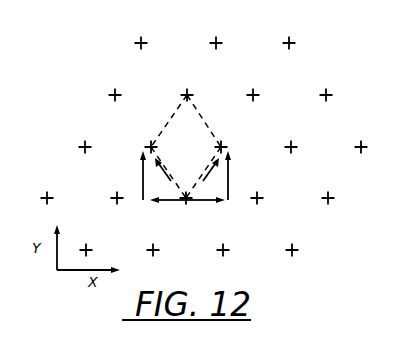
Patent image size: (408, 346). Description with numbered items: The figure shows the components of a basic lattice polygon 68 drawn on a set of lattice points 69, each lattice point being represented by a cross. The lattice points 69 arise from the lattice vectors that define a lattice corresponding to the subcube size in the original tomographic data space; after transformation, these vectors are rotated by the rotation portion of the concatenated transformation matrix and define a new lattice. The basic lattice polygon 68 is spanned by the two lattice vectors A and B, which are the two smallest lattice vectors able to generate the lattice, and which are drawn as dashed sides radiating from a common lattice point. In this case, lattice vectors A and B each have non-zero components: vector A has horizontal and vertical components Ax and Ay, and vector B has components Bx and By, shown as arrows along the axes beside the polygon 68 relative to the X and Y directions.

The basic lattice polygon 68 is at (181, 156).
The set of lattice points 69 is at (214, 19).
The lattice vector A is at (220, 187).
The lattice vector B is at (147, 187).